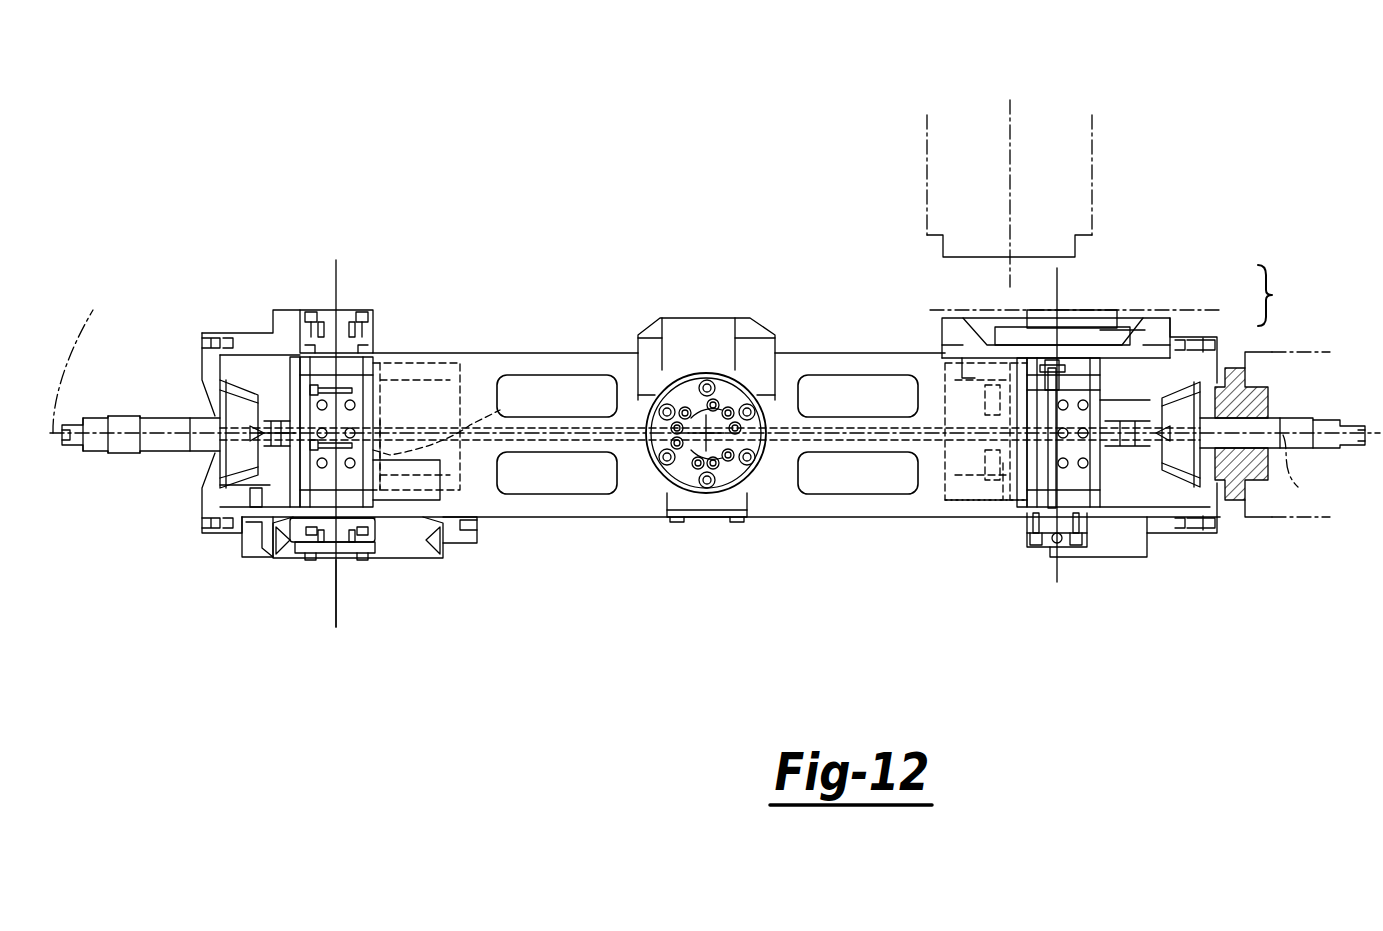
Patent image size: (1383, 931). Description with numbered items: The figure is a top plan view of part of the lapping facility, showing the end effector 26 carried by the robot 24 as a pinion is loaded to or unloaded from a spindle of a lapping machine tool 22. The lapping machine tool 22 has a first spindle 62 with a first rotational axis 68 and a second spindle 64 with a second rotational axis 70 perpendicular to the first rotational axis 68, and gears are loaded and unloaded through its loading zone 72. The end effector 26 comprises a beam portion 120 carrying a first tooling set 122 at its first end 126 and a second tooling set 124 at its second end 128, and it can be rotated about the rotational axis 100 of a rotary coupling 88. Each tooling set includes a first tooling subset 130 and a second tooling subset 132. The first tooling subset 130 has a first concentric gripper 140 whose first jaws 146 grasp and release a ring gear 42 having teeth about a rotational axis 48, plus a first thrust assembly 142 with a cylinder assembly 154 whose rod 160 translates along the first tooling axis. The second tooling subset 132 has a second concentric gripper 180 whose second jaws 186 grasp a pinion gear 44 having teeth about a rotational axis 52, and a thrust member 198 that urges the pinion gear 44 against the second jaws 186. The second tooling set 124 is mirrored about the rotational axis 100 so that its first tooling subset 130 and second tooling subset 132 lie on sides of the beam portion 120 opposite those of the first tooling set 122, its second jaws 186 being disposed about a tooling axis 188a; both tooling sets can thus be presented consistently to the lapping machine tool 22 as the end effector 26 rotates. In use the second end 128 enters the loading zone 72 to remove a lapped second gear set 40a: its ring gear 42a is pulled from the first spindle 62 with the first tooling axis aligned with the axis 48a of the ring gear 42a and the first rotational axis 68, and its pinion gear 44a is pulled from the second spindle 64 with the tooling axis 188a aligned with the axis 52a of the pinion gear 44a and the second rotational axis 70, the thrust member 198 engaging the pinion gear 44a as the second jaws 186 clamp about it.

The lapping machine tool 22 is at (1324, 364).
The robot 24 is at (660, 475).
The end effector 26 is at (877, 522).
The second gear set 40a is at (1286, 295).
The ring gear 42 is at (415, 558).
The ring gear 42a is at (1127, 333).
The pinion gear 44 is at (158, 447).
The pinion gear 44a is at (1163, 397).
The rotational axis 48 is at (335, 603).
The rotational axis 48a is at (1058, 283).
The rotational axis 52 is at (73, 371).
The rotational axis 52a is at (1317, 475).
The first spindle 62 is at (1080, 163).
The second spindle 64 is at (1293, 508).
The first rotational axis 68 is at (1010, 175).
The second rotational axis 70 is at (1368, 428).
The loading zone 72 is at (1221, 573).
The rotary coupling 88 is at (648, 417).
The rotational axis 100 is at (707, 434).
The beam portion 120 is at (843, 362).
The first tooling set 122 is at (233, 490).
The second tooling set 124 is at (1023, 541).
The first end 126 is at (437, 460).
The second end 128 is at (975, 500).
The first tooling subset 130 is at (242, 555).
The second tooling subset 132 is at (195, 253).
The first concentric gripper 140 is at (500, 410).
The first thrust assembly 142 is at (298, 297).
The first jaws 146 is at (467, 543).
The cylinder assembly 154 is at (346, 310).
The rod 160 is at (385, 412).
The second concentric gripper 180 is at (1033, 378).
The second jaws 186 is at (207, 362).
The tooling axis 188a is at (1003, 463).
The thrust member 198 is at (1153, 455).